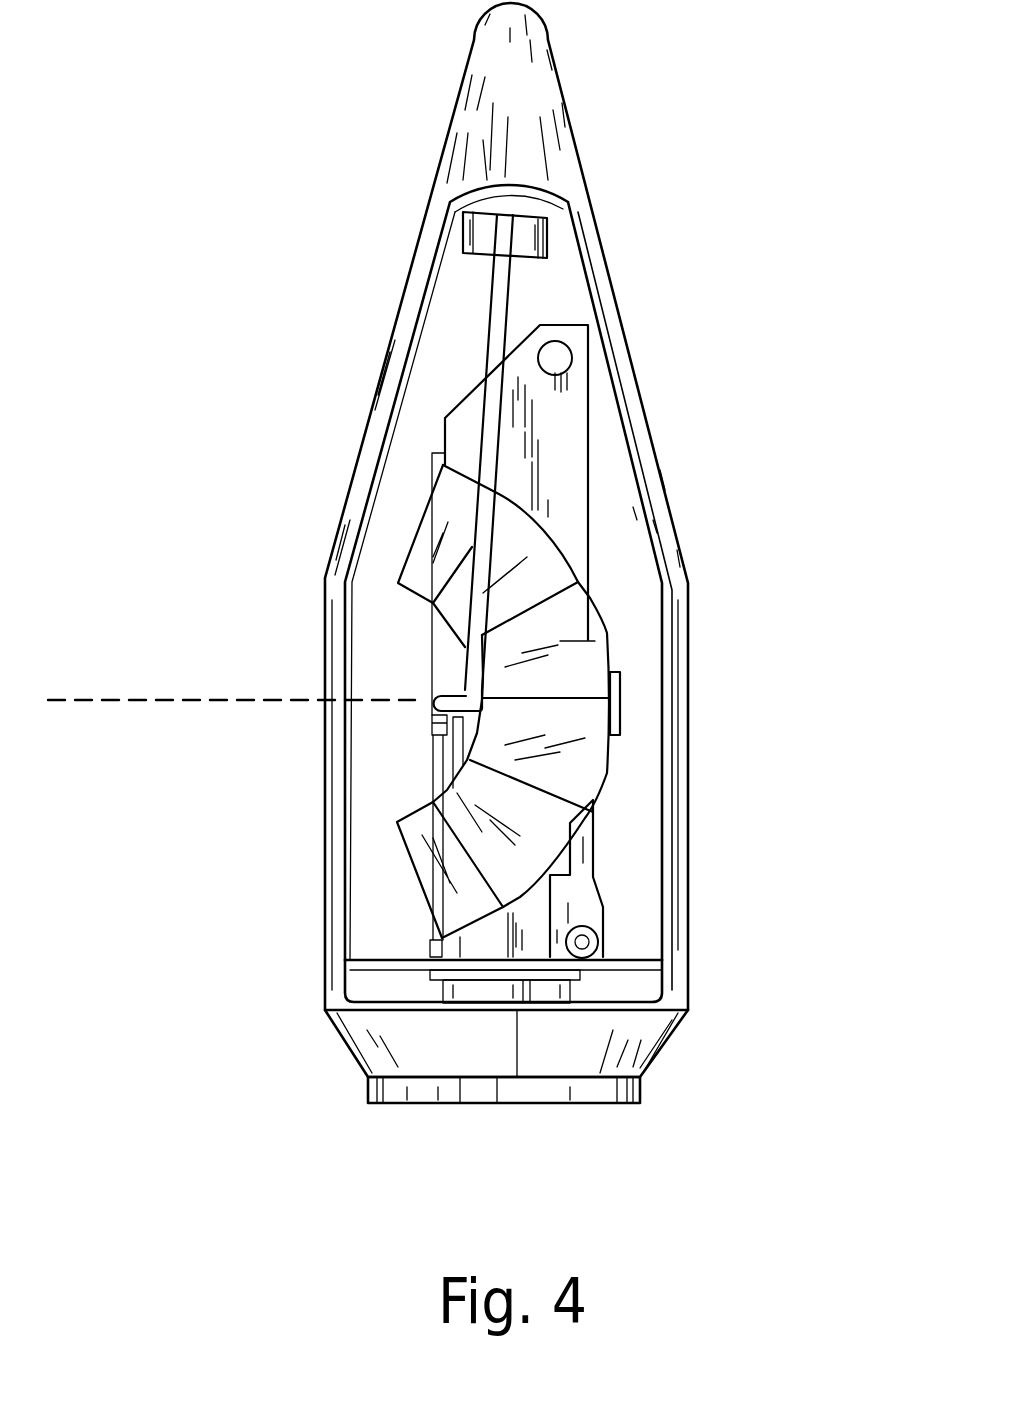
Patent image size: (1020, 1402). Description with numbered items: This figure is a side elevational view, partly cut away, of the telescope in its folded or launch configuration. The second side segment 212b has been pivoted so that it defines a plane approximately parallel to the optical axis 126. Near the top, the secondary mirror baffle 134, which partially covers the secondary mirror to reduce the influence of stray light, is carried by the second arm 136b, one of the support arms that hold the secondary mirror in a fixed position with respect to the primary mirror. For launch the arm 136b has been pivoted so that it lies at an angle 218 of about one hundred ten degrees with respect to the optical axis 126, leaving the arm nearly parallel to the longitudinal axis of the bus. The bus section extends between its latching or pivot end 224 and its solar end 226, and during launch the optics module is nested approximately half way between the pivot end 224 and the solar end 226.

The secondary mirror baffle 134 is at (546, 213).
The second arm 136b is at (510, 295).
The latching or pivot end 224 is at (577, 357).
The second side segment 212b is at (600, 624).
The angle 218 is at (440, 641).
The optical axis 126 is at (195, 703).
The solar end 226 is at (535, 913).